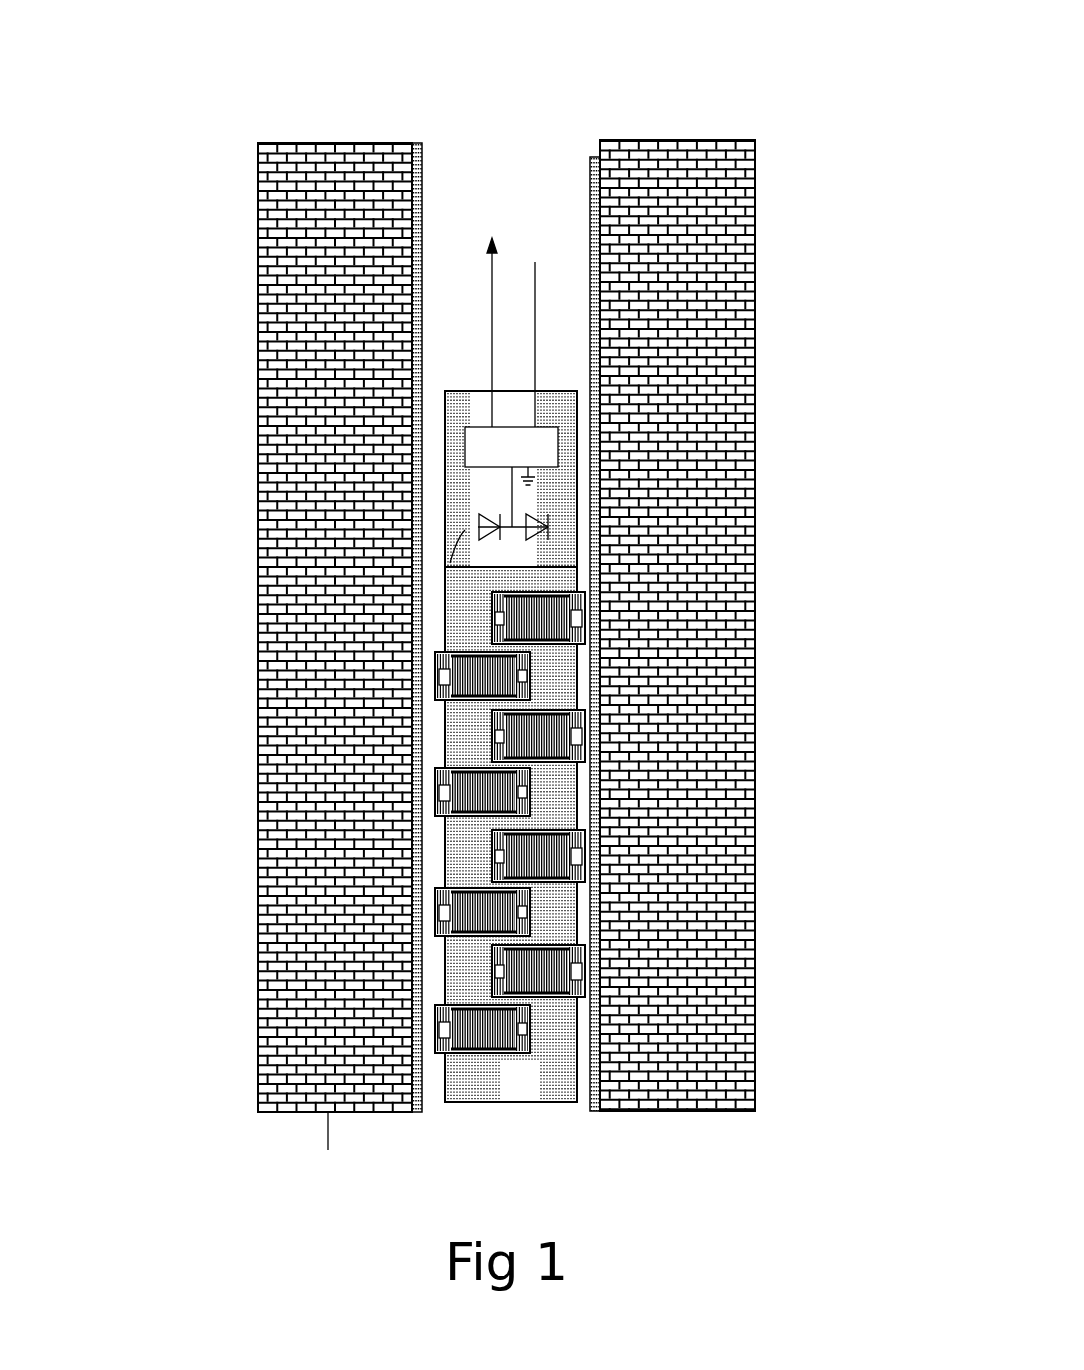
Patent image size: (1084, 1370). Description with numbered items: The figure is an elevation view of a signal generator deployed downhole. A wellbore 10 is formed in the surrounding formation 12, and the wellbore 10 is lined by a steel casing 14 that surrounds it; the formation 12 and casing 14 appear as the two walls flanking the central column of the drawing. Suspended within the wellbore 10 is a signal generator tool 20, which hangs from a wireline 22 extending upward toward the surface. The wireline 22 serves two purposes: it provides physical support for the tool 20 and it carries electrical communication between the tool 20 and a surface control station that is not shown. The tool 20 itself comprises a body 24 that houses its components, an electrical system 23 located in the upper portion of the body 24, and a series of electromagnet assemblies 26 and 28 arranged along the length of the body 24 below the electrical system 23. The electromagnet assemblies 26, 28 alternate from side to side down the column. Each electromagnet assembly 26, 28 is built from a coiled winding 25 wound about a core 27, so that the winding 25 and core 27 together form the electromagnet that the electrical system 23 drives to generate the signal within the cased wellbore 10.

The wellbore 10 is at (565, 236).
The formation 12 is at (738, 187).
The steel casing 14 is at (425, 163).
The signal generator tool 20 is at (577, 1117).
The wireline 22 is at (505, 262).
The electrical system 23 is at (538, 503).
The body 24 is at (463, 1100).
The coiled winding 25 is at (497, 1100).
The electromagnet assembly 26 is at (582, 726).
The core 27 is at (405, 1100).
The electromagnet assembly 28 is at (437, 785).